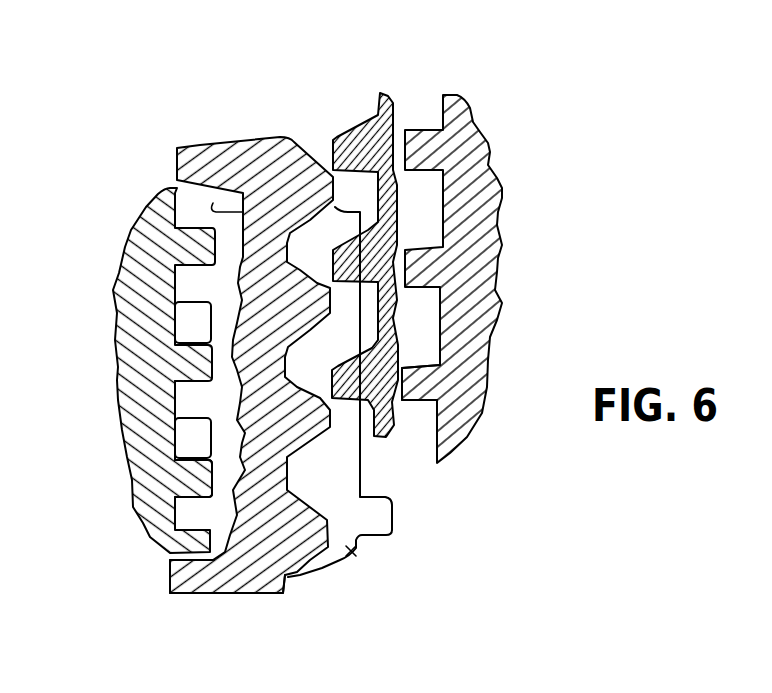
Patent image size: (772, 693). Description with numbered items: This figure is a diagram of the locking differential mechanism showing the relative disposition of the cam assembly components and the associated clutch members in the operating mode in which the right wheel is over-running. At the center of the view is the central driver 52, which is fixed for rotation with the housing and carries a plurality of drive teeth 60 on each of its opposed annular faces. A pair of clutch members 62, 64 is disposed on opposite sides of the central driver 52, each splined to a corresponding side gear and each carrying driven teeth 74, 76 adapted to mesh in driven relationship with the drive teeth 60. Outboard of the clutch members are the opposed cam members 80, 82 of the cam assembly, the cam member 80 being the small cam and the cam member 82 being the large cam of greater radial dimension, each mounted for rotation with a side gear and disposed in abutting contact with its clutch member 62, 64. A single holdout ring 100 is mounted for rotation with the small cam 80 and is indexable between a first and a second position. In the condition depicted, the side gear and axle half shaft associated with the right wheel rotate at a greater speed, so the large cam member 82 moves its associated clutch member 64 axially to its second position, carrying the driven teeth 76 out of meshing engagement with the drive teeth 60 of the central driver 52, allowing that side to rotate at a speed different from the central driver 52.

The central driver 52 is at (352, 550).
The drive teeth 60 is at (182, 396).
The clutch member 62 is at (124, 292).
The clutch member 64 is at (490, 310).
The driven teeth 74 is at (192, 468).
The driven teeth 76 is at (415, 378).
The cam member 80 is at (252, 542).
The cam member 82 is at (390, 117).
The holdout ring 100 is at (262, 146).